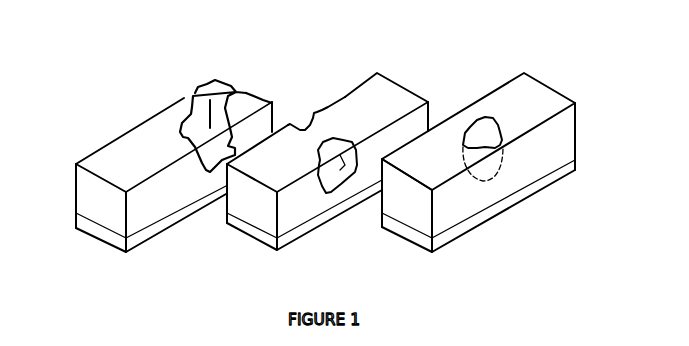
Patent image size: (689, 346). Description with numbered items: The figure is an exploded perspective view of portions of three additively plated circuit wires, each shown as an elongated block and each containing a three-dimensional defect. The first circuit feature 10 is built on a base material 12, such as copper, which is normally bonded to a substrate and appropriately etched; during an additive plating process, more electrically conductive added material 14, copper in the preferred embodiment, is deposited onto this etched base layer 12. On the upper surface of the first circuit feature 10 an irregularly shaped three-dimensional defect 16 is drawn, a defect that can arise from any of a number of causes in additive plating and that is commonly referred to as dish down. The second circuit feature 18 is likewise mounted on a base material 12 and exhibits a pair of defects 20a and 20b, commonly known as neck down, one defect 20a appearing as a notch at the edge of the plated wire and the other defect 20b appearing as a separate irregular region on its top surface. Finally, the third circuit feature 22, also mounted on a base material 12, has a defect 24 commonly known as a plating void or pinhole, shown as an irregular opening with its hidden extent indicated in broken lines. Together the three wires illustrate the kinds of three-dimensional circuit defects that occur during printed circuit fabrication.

The circuit feature 10 is at (237, 86).
The base material 12 is at (93, 231).
The added material 14 is at (147, 150).
The three-dimensional defect 16 is at (210, 100).
The circuit feature 18 is at (413, 90).
The defect 20a is at (302, 122).
The defect 20b is at (340, 163).
The circuit feature 22 is at (550, 85).
The defect 24 is at (483, 134).